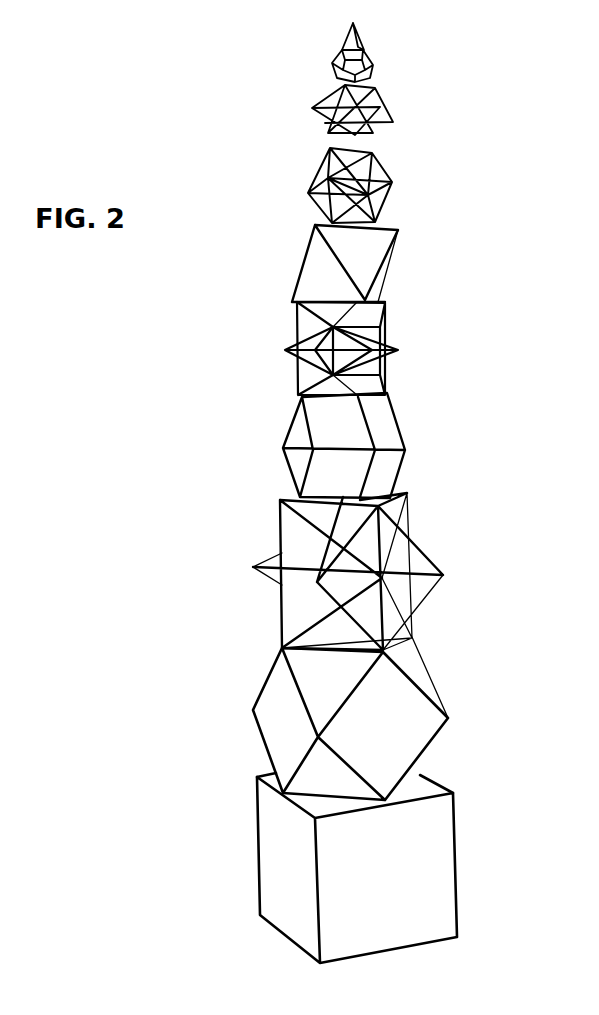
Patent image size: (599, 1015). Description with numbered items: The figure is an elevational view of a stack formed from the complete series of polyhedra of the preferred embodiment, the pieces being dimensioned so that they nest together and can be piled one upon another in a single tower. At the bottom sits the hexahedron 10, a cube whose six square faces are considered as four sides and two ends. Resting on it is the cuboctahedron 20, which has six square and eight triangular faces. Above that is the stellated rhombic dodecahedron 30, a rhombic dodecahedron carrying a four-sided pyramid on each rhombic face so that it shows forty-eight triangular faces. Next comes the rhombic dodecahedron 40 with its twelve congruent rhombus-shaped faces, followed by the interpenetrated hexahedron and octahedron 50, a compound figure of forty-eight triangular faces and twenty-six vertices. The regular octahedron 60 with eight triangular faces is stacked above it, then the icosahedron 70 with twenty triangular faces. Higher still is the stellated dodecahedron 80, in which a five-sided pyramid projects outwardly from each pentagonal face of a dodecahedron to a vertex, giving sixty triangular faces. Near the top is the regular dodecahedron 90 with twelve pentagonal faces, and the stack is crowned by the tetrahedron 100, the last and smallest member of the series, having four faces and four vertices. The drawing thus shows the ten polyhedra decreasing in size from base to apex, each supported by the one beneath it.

The hexahedron 10 is at (477, 861).
The cuboctahedron 20 is at (462, 685).
The stellated rhombic dodecahedron 30 is at (439, 537).
The rhombic dodecahedron 40 is at (422, 427).
The interpenetrated hexahedron and octahedron 50 is at (416, 345).
The octahedron 60 is at (407, 260).
The icosahedron 70 is at (405, 181).
The stellated dodecahedron 80 is at (407, 112).
The dodecahedron 90 is at (394, 67).
The tetrahedron 100 is at (376, 34).